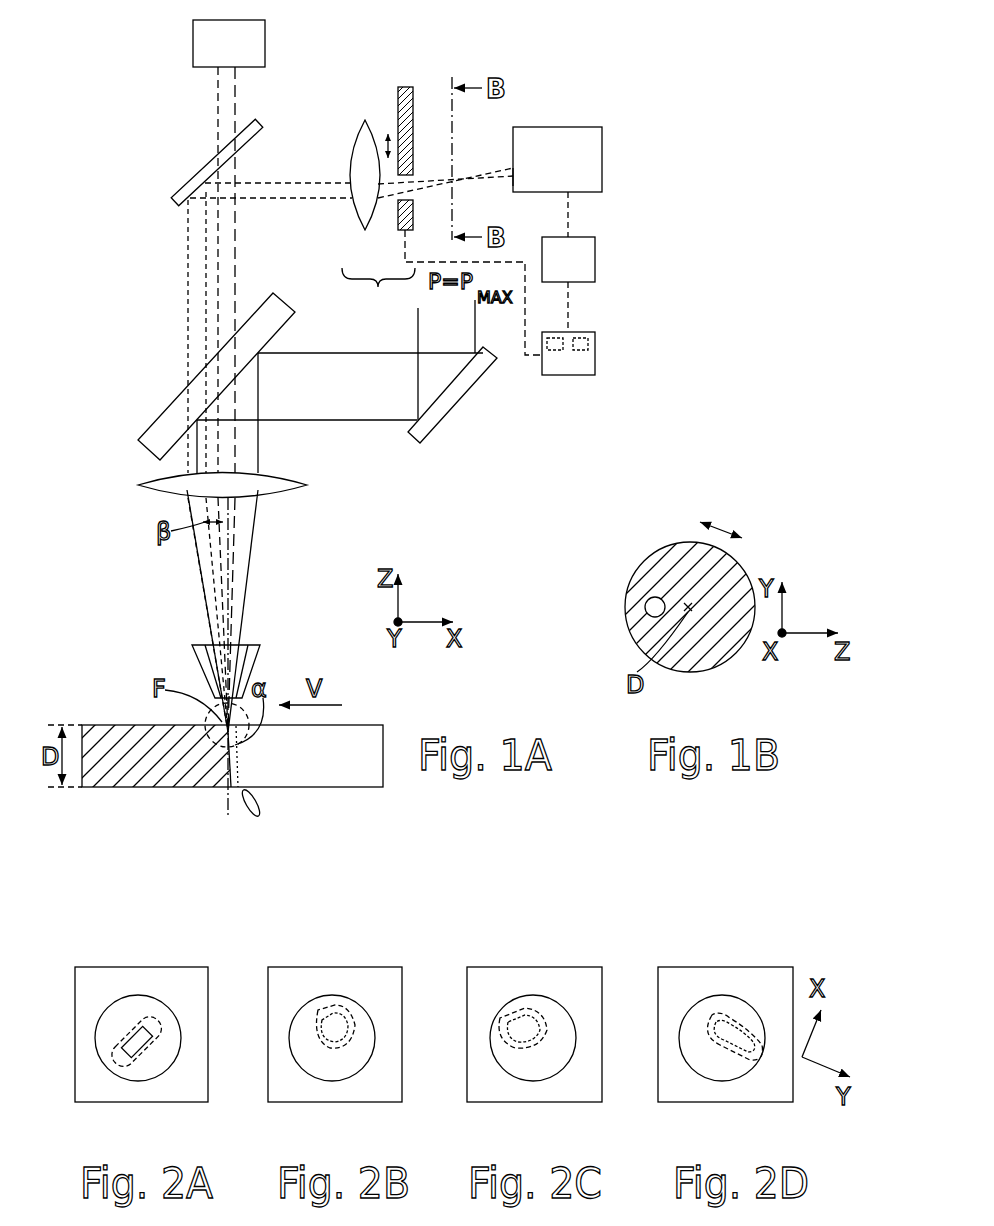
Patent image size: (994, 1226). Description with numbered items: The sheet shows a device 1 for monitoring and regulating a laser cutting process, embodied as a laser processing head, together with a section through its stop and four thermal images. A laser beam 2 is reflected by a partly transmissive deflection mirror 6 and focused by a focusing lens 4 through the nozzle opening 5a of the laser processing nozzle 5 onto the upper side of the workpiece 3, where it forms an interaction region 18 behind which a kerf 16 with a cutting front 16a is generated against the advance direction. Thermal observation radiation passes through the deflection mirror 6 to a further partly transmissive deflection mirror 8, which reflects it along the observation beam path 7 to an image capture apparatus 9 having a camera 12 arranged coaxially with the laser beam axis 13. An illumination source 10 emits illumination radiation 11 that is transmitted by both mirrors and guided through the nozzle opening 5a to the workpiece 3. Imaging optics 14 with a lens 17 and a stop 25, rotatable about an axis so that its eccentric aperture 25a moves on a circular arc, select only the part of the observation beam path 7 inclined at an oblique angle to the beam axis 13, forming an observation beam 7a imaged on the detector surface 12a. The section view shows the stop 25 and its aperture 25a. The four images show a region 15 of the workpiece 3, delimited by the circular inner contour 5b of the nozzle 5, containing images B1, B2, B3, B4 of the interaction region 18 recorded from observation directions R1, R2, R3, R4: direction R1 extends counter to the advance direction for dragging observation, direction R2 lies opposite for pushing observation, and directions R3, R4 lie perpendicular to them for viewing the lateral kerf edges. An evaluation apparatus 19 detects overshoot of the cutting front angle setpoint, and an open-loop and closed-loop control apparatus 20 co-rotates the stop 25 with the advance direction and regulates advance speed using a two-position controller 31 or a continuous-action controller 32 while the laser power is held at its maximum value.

In FIG. 1A, the device 1 is at (78, 279).
In FIG. 1A, the laser beam 2 is at (323, 368).
In FIG. 1A, the workpiece 3 is at (138, 773).
In FIG. 1A, the focusing lens 4 is at (150, 494).
In FIG. 1A, the laser processing nozzle 5 is at (192, 663).
In FIG. 1A, the nozzle opening 5a is at (238, 642).
In FIG. 1A, the circular inner contour 5b is at (215, 642).
In FIG. 2A, the circular inner contour 5b is at (110, 1005).
In FIG. 2B, the circular inner contour 5b is at (307, 1003).
In FIG. 2C, the circular inner contour 5b is at (528, 995).
In FIG. 2D, the circular inner contour 5b is at (697, 1003).
In FIG. 1A, the deflection mirror 6 is at (173, 402).
In FIG. 1A, the observation beam path 7 is at (316, 216).
In FIG. 1A, the observation beam 7a is at (413, 187).
In FIG. 1A, the further partly transmissive deflection mirror 8 is at (198, 177).
In FIG. 1A, the image capture apparatus 9 is at (510, 114).
In FIG. 1A, the illumination source 10 is at (210, 45).
In FIG. 1A, the illumination radiation 11 is at (218, 100).
In FIG. 1A, the camera 12 is at (582, 140).
In FIG. 1A, the detector surface 12a is at (512, 182).
In FIG. 1A, the laser beam axis 13 is at (232, 536).
In FIG. 1A, the imaging optics 14 is at (378, 292).
In FIG. 2A, the region to be monitored 15 is at (167, 1047).
In FIG. 2B, the region to be monitored 15 is at (360, 1047).
In FIG. 2C, the region to be monitored 15 is at (560, 1047).
In FIG. 2D, the region to be monitored 15 is at (710, 1063).
In FIG. 1A, the kerf 16 is at (360, 746).
In FIG. 1A, the cutting front 16a is at (254, 790).
In FIG. 1A, the lens 17 is at (362, 140).
In FIG. 1A, the interaction region 18 is at (210, 722).
In FIG. 1A, the evaluation apparatus 19 is at (578, 265).
In FIG. 1A, the open-loop and closed-loop control apparatus 20 is at (577, 360).
In FIG. 1A, the stop 25 is at (400, 105).
In FIG. 1B, the stop 25 is at (695, 563).
In FIG. 1B, the aperture 25a is at (648, 603).
In FIG. 1A, the two-position controller 31 is at (590, 345).
In FIG. 1A, the continuous-action controller 32 is at (556, 355).
In FIG. 1A, the observation direction R1 is at (188, 556).
In FIG. 2A, the observation direction R1 is at (138, 1037).
In FIG. 2B, the further observation direction R2 is at (333, 1027).
In FIG. 2C, the third observation direction R3 is at (537, 1020).
In FIG. 2D, the fourth observation direction R4 is at (727, 1030).
In FIG. 2A, the image B1 is at (123, 1035).
In FIG. 2B, the further image B2 is at (333, 1008).
In FIG. 2C, the image B3 is at (532, 1023).
In FIG. 2D, the image B4 is at (717, 1027).